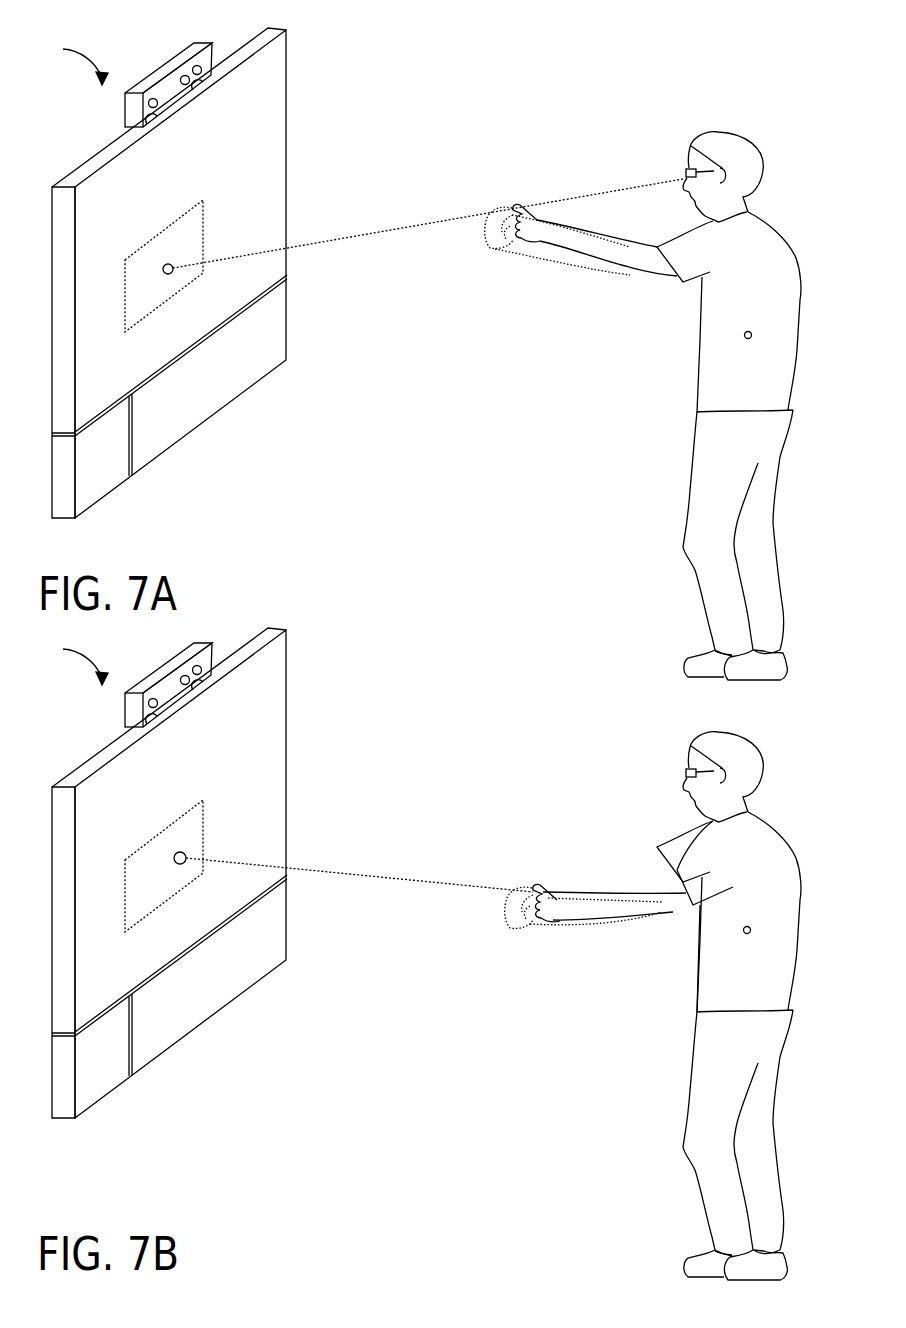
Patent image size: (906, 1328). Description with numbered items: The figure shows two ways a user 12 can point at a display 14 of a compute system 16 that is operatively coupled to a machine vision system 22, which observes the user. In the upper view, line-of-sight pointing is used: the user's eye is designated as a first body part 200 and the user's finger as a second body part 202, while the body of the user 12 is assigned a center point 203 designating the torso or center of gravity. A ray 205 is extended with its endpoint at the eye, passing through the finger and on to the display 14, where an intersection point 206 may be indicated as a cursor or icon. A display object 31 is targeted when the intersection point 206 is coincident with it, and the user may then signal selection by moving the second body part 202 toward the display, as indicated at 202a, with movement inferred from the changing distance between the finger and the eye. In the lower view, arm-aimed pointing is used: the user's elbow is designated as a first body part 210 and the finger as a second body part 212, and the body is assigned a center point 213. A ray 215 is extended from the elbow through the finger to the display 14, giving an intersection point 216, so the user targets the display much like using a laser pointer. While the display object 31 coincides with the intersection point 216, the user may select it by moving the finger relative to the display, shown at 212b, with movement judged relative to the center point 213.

In FIG. 7A, the compute system 16 is at (72, 63).
In FIG. 7B, the compute system 16 is at (72, 663).
In FIG. 7A, the display 14 is at (273, 100).
In FIG. 7B, the display 14 is at (169, 873).
In FIG. 7A, the machine vision system 22 is at (125, 108).
In FIG. 7B, the machine vision system 22 is at (135, 685).
In FIG. 7A, the display object 31 is at (156, 303).
In FIG. 7B, the display object 31 is at (164, 866).
In FIG. 7A, the intersection point 206 is at (172, 274).
In FIG. 7A, the ray 205 is at (613, 189).
In FIG. 7A, the user 12 is at (774, 291).
In FIG. 7B, the user 12 is at (772, 888).
In FIG. 7A, the first body part 200 is at (686, 168).
In FIG. 7A, the center point 203 is at (749, 339).
In FIG. 7A, the second body part 202 is at (517, 208).
In FIG. 7A, the movement of second body part towards the display 202a is at (490, 210).
In FIG. 7B, the intersection point 216 is at (182, 864).
In FIG. 7B, the center point 213 is at (748, 934).
In FIG. 7B, the first body part 210 is at (668, 909).
In FIG. 7B, the ray 215 is at (595, 893).
In FIG. 7B, the second body part 212 is at (540, 888).
In FIG. 7B, the previous hand position 212b is at (505, 892).